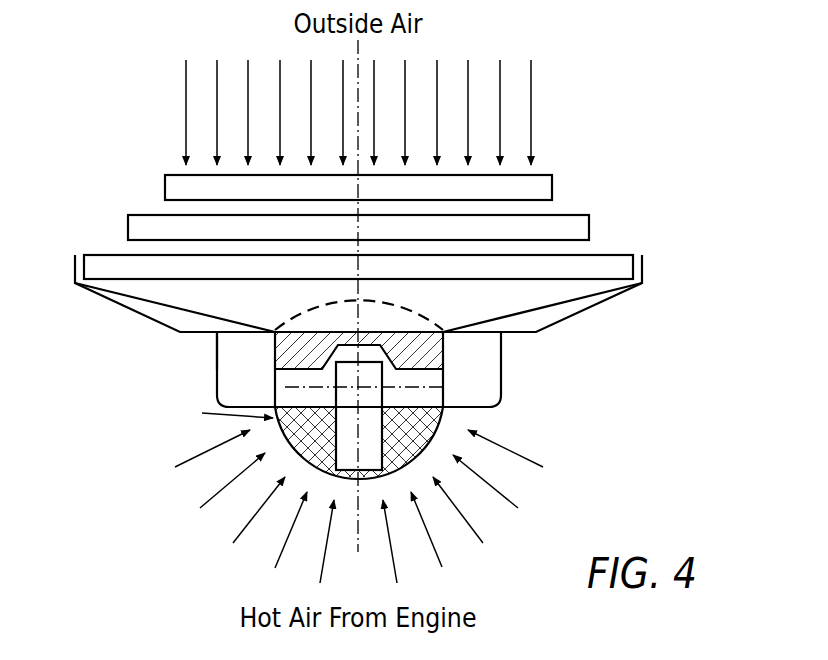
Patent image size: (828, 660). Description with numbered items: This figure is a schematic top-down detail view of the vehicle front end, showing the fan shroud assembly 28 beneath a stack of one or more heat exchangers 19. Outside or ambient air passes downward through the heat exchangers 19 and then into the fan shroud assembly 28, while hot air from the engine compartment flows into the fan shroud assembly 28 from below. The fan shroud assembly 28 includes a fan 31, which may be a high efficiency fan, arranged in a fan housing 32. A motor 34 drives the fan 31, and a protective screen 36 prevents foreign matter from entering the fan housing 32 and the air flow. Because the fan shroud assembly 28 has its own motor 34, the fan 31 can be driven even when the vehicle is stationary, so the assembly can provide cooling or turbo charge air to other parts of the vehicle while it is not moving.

The heat exchangers 19 is at (672, 148).
The fan shroud assembly 28 is at (527, 371).
The fan 31 is at (275, 358).
The fan housing 32 is at (216, 343).
The motor 34 is at (334, 375).
The protective screen 36 is at (388, 396).